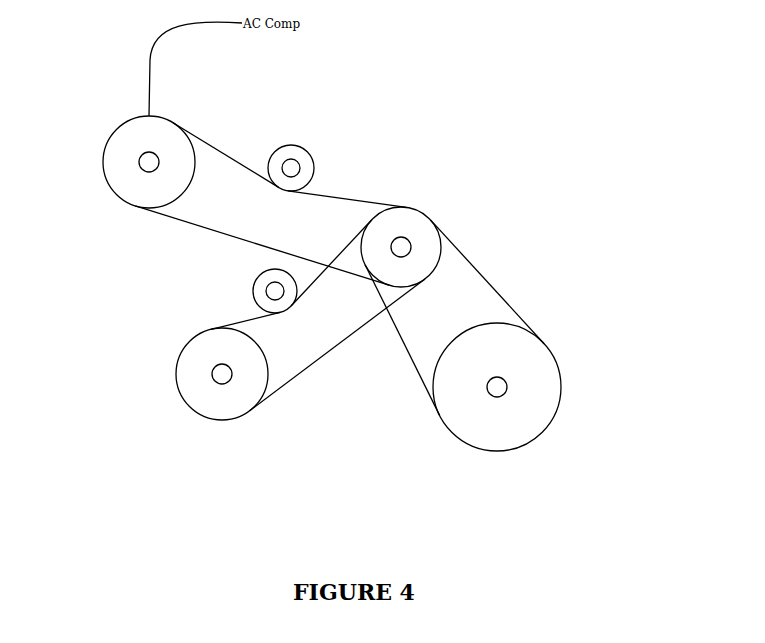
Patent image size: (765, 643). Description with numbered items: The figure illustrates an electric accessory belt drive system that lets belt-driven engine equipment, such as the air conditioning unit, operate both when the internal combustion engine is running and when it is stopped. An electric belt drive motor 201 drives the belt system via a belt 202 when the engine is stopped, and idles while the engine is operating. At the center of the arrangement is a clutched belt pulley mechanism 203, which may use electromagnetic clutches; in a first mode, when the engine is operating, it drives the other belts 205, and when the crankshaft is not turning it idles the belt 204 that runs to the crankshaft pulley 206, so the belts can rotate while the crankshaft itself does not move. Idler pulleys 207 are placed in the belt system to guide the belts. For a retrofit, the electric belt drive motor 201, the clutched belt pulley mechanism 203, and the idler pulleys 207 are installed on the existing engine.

The electric belt drive motor 201 is at (180, 397).
The belt 202 is at (342, 339).
The clutched belt pulley mechanism 203 is at (426, 212).
The belt 204 is at (487, 280).
The other belts 205 is at (233, 157).
The crankshaft pulley 206 is at (547, 430).
The idler pulleys 207 is at (308, 151).